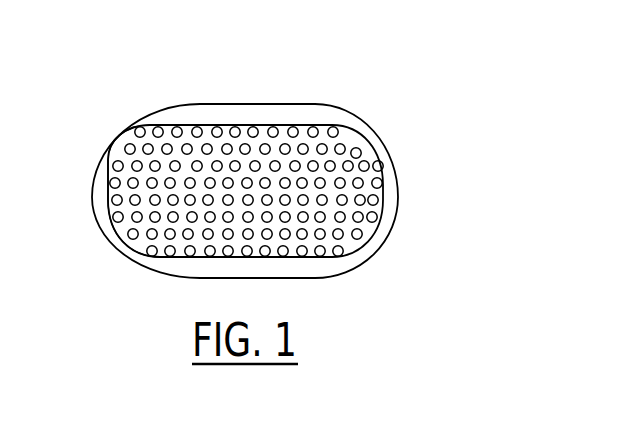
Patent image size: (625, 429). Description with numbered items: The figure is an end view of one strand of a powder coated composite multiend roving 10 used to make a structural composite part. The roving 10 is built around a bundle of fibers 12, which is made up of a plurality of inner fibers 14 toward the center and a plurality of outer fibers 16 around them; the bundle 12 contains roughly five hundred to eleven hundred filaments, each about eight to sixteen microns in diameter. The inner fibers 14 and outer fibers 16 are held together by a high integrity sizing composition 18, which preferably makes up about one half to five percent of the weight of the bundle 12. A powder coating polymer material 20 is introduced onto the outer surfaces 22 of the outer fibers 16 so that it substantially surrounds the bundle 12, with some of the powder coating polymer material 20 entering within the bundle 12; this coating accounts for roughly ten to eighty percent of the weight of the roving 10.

The powder coated composite multiend roving 10 is at (283, 171).
The bundle of fibers 12 is at (147, 236).
The inner fibers 14 is at (283, 187).
The outer fibers 16 is at (263, 250).
The high integrity sizing composition 18 is at (248, 134).
The powder coating polymer material 20 is at (394, 165).
The outer surfaces 22 is at (112, 207).